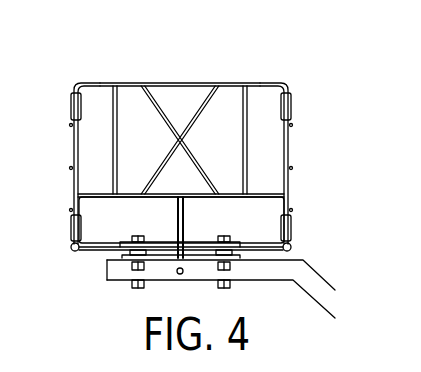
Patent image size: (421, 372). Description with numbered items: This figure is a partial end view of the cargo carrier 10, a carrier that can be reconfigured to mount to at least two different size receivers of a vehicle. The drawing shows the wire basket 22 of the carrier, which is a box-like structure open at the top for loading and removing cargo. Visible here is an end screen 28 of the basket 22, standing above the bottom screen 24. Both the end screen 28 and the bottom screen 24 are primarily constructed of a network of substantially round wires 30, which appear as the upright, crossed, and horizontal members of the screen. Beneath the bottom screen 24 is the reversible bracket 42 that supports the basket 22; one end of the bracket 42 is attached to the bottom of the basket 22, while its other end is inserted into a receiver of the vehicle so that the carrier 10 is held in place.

The cargo carrier 10 is at (215, 173).
The wire basket 22 is at (75, 83).
The bottom screen 24 is at (263, 247).
The end screens 28 is at (188, 83).
The round wires 30 is at (200, 109).
The reversible bracket 42 is at (316, 272).